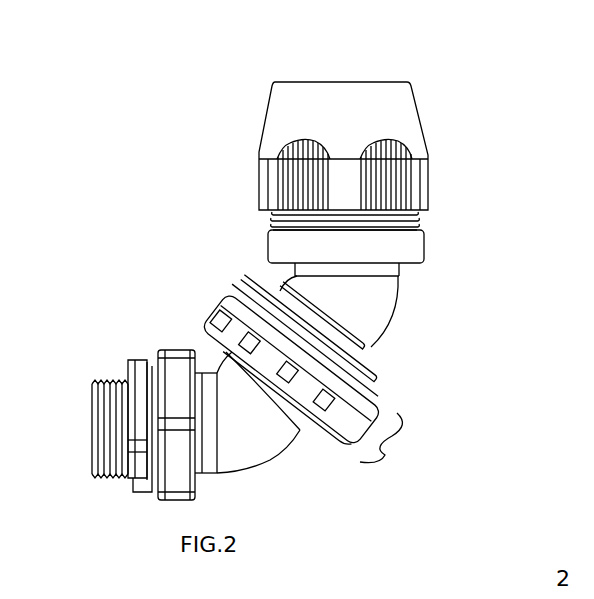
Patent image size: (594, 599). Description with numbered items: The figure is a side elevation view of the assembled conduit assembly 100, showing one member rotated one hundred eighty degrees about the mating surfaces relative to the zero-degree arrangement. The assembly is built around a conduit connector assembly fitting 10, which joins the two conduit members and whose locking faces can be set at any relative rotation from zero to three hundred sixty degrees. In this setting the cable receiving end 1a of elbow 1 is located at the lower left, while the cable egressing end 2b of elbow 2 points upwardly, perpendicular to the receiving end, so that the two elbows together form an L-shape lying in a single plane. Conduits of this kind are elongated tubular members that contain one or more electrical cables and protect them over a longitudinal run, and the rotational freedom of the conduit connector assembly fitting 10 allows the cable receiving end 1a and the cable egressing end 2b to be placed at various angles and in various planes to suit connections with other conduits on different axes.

The conduit assembly 100 is at (312, 290).
The cable egressing end 2b is at (380, 82).
The elbow 2 is at (397, 305).
The elbow 1 is at (195, 436).
The cable receiving end 1a is at (98, 467).
The conduit connector assembly fitting 10 is at (389, 442).